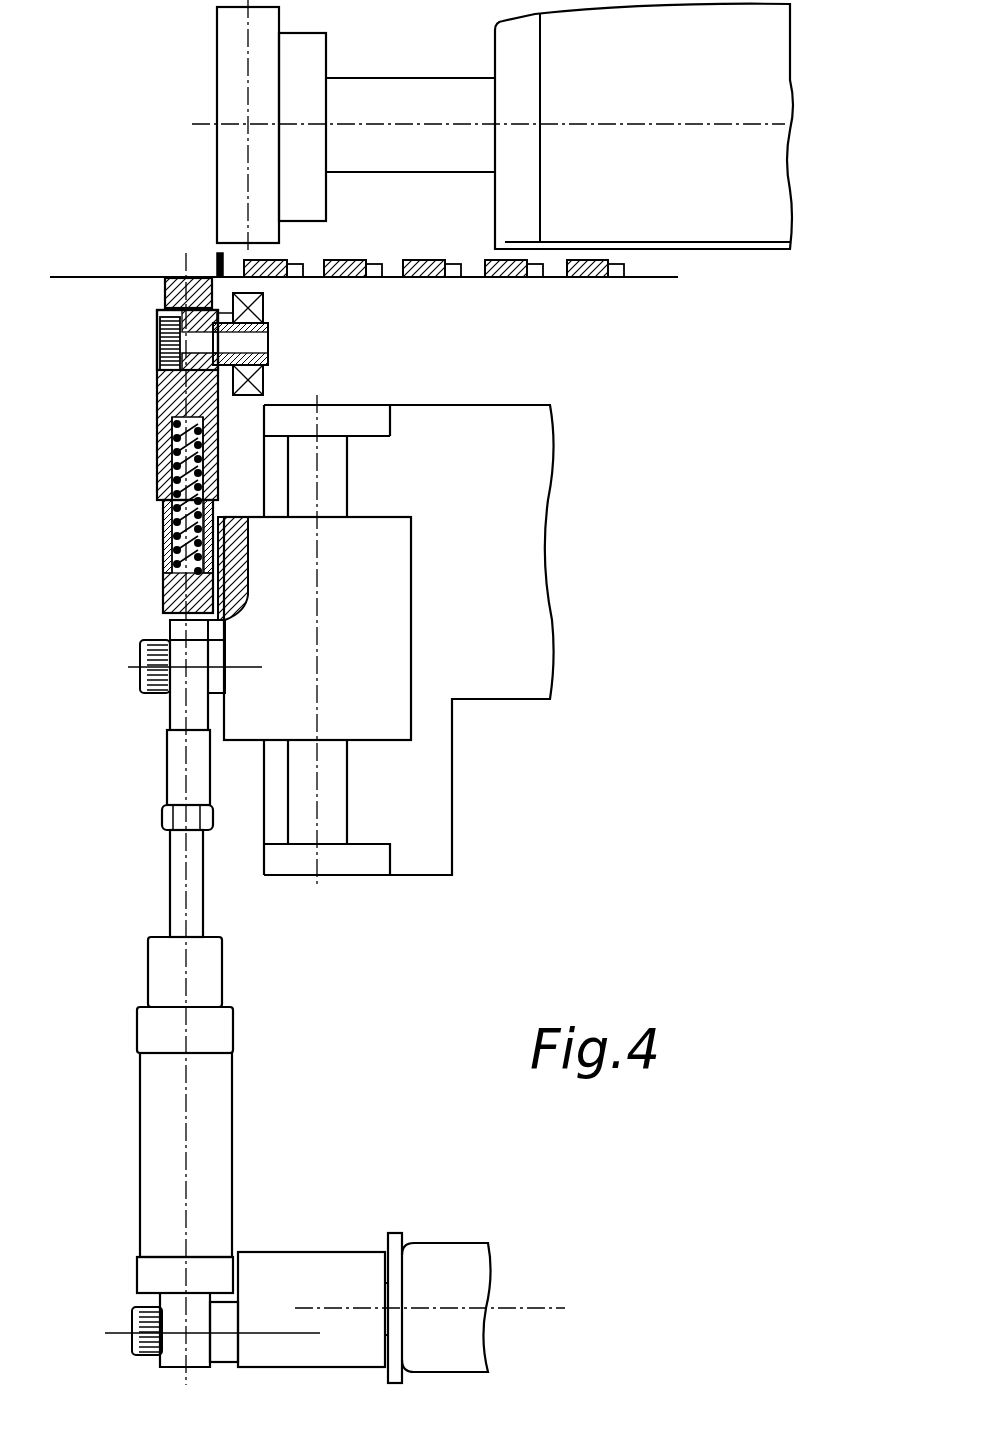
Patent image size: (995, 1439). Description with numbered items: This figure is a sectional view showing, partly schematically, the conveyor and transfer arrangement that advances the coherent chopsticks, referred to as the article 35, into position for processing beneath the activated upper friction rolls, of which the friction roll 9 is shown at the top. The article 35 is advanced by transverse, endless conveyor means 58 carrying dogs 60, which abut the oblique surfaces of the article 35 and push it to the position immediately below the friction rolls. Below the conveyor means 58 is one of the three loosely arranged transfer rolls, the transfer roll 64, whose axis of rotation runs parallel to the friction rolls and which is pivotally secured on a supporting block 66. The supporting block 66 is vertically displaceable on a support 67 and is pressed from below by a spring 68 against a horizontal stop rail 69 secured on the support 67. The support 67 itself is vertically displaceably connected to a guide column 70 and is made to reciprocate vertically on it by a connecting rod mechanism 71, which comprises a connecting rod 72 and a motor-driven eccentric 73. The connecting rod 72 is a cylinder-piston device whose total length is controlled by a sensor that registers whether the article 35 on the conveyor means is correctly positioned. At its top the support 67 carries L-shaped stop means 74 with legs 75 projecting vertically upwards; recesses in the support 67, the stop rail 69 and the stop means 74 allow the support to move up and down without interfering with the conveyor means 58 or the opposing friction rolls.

The upper friction roll 9 is at (230, 60).
The article 35 is at (280, 279).
The transverse endless conveyor means 58 is at (668, 280).
The dog 60 is at (296, 281).
The transfer roll 64 is at (265, 382).
The supporting block 66 is at (172, 400).
The support 67 is at (172, 598).
The spring 68 is at (170, 528).
The horizontal stop rail 69 is at (165, 292).
The guide column 70 is at (333, 790).
The connecting rod mechanism 71 is at (236, 1124).
The connecting rod 72 is at (160, 975).
The motor-driven eccentric 73 is at (226, 1322).
The L-shaped stop means 74 is at (172, 279).
The leg 75 is at (215, 262).